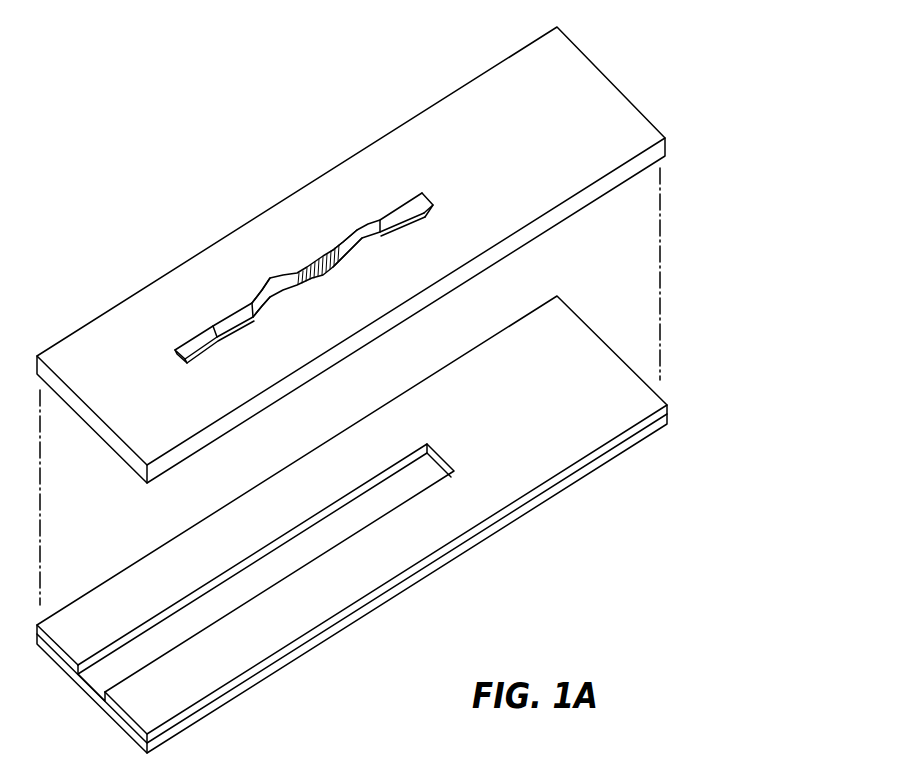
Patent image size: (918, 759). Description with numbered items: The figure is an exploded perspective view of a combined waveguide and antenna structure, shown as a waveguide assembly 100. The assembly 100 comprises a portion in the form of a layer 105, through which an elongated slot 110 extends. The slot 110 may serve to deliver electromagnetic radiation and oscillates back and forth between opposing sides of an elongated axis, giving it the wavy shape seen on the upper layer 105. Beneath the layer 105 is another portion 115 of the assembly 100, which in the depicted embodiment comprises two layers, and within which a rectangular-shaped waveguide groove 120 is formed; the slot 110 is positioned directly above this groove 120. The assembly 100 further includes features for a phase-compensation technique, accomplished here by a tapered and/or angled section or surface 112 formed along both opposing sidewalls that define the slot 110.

The waveguide assembly 100 is at (650, 80).
The layer 105 is at (568, 66).
The elongated slot 110 is at (343, 232).
The tapered and/or angled section/surface 112 is at (318, 258).
The portion 115 is at (571, 353).
The waveguide groove 120 is at (420, 472).